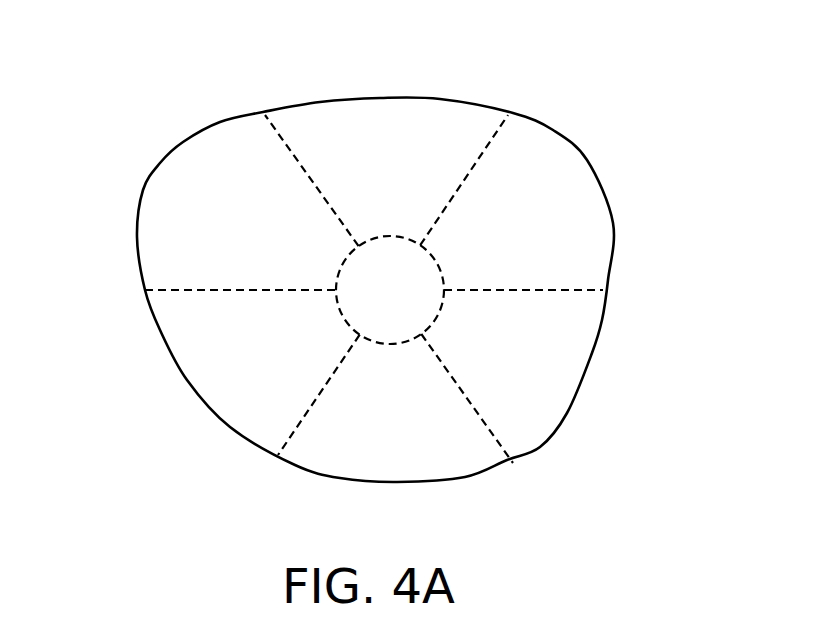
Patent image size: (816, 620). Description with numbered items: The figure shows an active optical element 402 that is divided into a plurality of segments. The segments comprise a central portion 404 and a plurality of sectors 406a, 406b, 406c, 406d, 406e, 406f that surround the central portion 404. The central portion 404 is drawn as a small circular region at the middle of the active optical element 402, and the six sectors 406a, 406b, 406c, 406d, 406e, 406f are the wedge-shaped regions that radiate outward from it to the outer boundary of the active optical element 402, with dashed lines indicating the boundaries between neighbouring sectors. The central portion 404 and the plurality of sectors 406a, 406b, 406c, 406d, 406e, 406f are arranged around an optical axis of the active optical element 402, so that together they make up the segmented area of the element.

The active optical element 402 is at (451, 261).
The central portion 404 is at (238, 282).
The sector 406a is at (243, 153).
The sector 406b is at (397, 130).
The sector 406c is at (544, 177).
The sector 406d is at (575, 398).
The sector 406e is at (398, 452).
The sector 406f is at (240, 399).